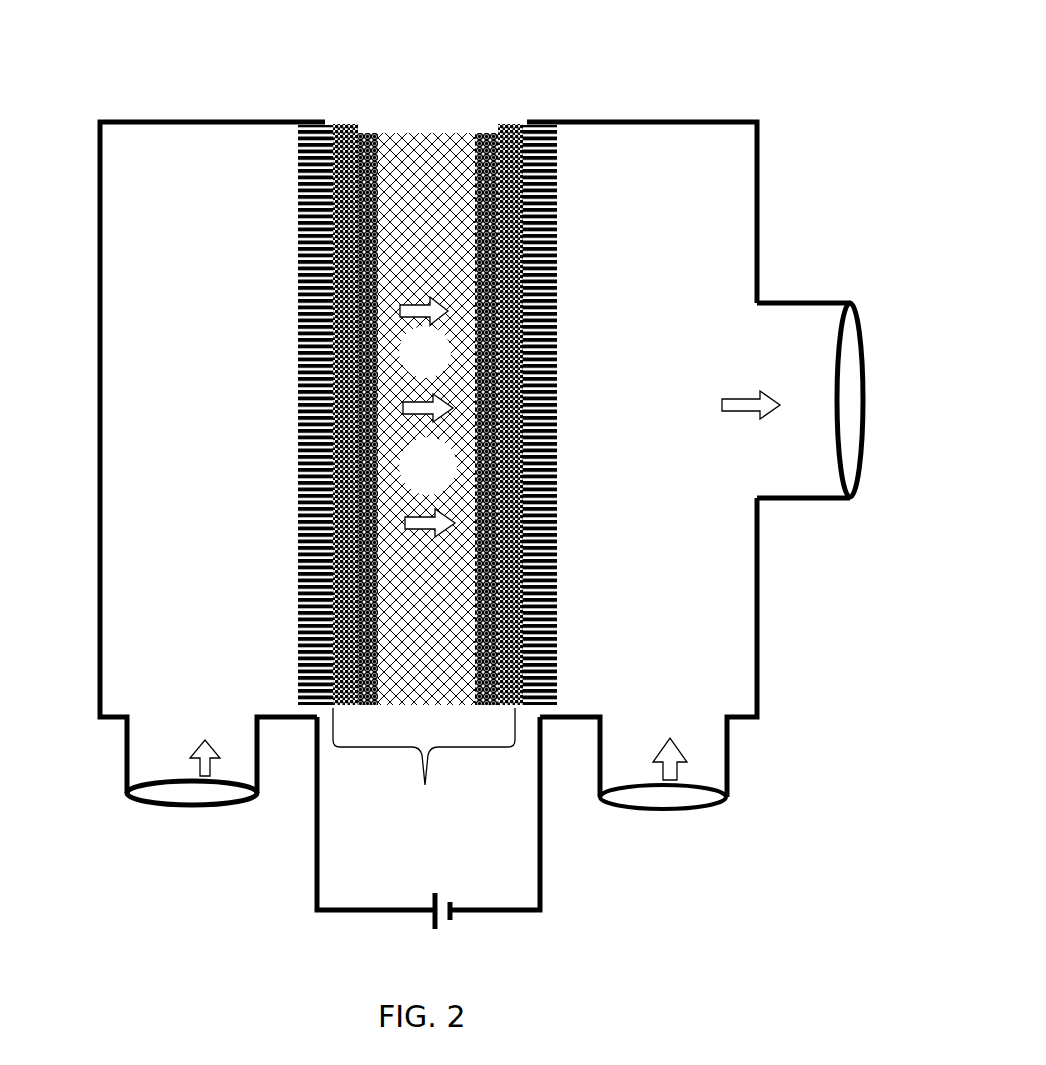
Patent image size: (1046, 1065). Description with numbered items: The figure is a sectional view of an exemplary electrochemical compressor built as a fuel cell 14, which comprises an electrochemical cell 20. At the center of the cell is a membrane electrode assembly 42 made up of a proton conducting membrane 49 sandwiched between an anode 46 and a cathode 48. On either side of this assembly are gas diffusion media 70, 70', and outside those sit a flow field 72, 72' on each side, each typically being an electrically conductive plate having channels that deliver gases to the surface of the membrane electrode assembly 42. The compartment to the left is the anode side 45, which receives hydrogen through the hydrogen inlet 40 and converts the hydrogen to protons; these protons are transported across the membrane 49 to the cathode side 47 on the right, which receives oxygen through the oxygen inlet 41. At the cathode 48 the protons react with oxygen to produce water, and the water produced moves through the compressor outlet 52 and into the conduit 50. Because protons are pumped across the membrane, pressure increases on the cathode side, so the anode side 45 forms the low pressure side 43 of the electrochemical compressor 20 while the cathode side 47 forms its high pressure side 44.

The fuel cell 14 is at (453, 467).
The electrochemical cell 20 is at (522, 710).
The hydrogen inlet 40 is at (148, 748).
The oxygen inlet 41 is at (717, 737).
The membrane electrode assembly 42 is at (425, 785).
The low pressure side 43 is at (228, 150).
The high pressure side 44 is at (673, 170).
The anode side 45 is at (300, 222).
The anode 46 is at (368, 133).
The cathode side 47 is at (557, 238).
The cathode 48 is at (487, 135).
The proton conducting membrane 49 is at (425, 135).
The conduit 50 is at (812, 465).
The compressor outlet 52 is at (797, 343).
The gas diffusion media 70 is at (327, 370).
The gas diffusion media 70' is at (523, 364).
The flow field 72 is at (275, 375).
The flow field 72' is at (592, 364).